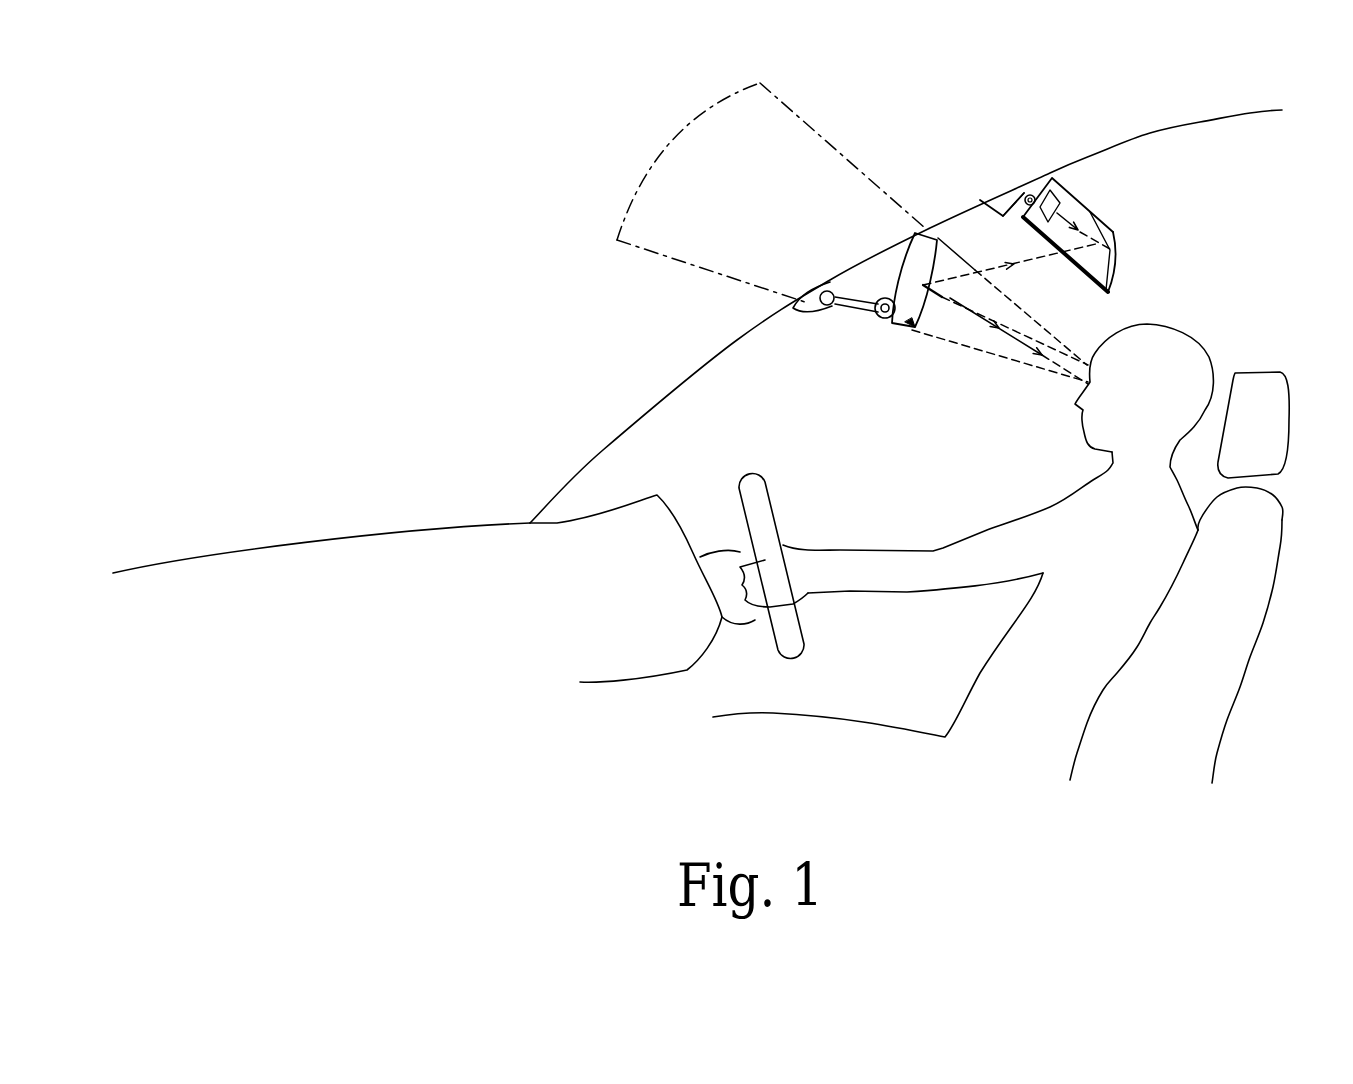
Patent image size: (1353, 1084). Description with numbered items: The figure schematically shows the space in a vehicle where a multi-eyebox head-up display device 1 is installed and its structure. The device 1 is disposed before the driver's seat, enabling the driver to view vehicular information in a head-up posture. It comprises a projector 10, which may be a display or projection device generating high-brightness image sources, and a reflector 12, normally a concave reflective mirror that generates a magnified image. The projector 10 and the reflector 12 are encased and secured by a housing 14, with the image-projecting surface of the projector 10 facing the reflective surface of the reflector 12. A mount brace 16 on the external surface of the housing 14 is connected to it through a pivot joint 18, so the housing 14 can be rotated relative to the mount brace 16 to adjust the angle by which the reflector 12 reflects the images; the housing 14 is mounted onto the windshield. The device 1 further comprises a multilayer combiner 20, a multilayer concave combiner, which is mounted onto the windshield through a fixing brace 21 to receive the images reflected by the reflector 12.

The multi-eyebox head-up display device 1 is at (615, 318).
The projector 10 is at (1061, 202).
The reflector 12 is at (1112, 247).
The housing 14 is at (1083, 194).
The mount brace 16 is at (997, 203).
The pivot joint 18 is at (1005, 208).
The multilayer combiner 20 is at (917, 332).
The fixing brace 21 is at (828, 312).